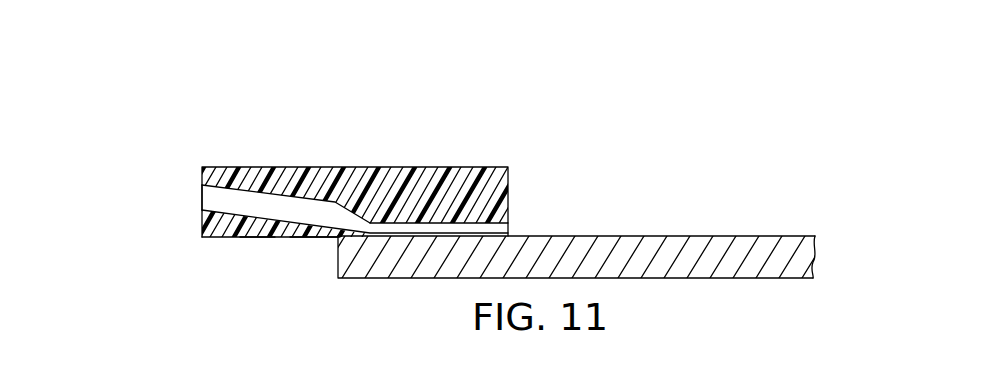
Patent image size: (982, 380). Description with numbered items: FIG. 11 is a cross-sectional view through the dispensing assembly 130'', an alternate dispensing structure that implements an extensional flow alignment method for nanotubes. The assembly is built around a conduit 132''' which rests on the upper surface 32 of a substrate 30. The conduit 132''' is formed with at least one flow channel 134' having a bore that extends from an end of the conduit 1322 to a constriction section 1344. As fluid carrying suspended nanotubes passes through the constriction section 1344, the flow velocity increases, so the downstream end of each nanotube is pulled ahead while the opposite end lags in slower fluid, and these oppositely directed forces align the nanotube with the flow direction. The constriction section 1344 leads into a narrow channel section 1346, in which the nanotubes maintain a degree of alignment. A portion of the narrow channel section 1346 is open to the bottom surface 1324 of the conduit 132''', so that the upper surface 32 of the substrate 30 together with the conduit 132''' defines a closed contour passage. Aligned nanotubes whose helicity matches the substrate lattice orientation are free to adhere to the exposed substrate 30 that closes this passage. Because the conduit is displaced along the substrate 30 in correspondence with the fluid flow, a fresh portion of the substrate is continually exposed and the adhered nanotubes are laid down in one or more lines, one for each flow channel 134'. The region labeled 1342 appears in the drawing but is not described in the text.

The dispensing assembly 130'' is at (353, 192).
The conduit 132''' is at (385, 152).
The slot upper wall 1342 is at (246, 210).
The constriction section 1344 is at (352, 221).
The narrow channel section 1346 is at (508, 230).
The end of the conduit 1322 is at (202, 200).
The flow channel 134' is at (241, 306).
The bottom surface 1324 is at (310, 237).
The upper surface 32 is at (743, 236).
The substrate 30 is at (806, 236).